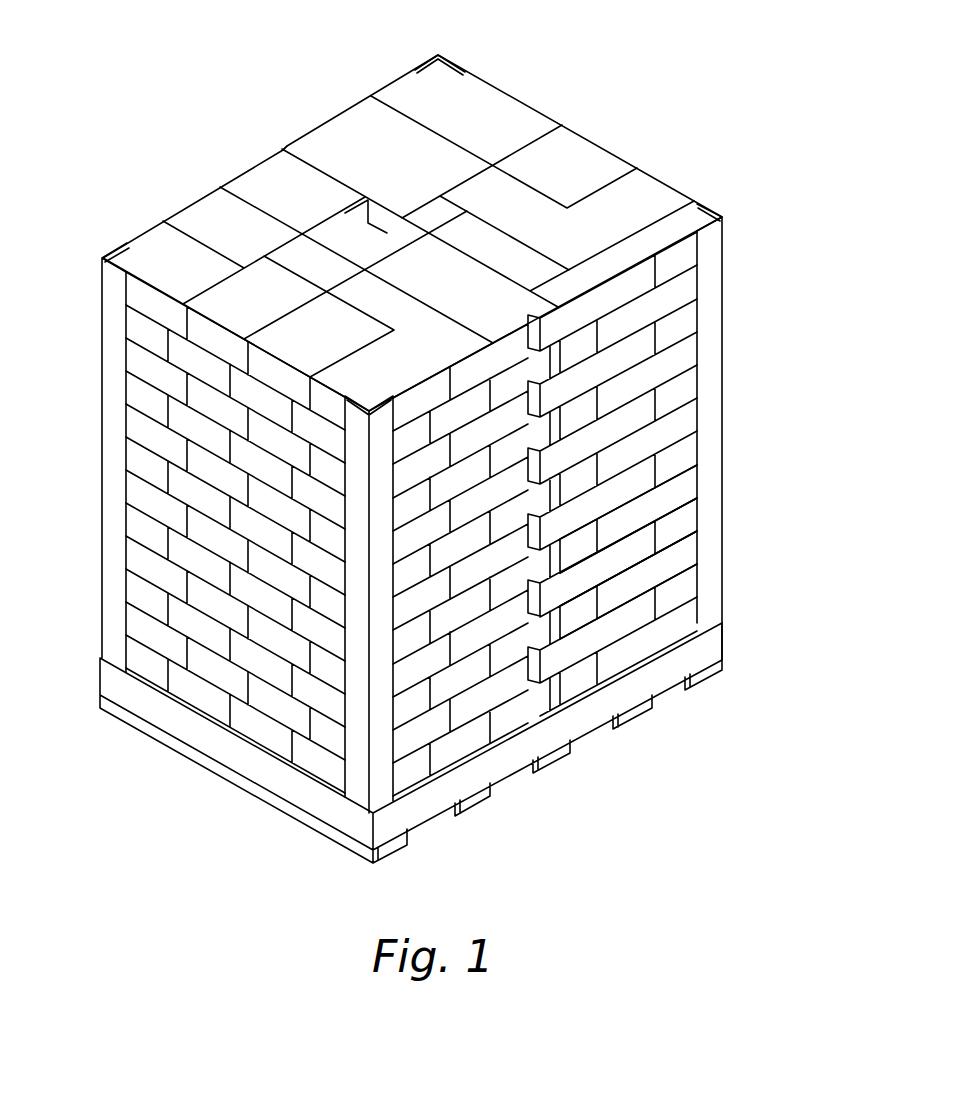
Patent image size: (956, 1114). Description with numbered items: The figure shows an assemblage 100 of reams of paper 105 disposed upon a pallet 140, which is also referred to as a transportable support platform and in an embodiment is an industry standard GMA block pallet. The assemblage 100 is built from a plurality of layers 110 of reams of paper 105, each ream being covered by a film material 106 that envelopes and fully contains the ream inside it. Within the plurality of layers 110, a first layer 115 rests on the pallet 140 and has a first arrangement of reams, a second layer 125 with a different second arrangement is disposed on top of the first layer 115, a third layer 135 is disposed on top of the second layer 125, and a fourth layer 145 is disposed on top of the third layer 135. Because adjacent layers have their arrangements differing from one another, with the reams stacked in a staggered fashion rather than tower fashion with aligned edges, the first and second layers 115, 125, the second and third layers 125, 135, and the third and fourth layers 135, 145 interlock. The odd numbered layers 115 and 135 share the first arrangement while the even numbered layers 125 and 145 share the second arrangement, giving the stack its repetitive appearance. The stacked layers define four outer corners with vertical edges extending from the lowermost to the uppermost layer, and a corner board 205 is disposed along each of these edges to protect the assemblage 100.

The assemblage 100 is at (711, 93).
The ream of paper 105 is at (465, 92).
The film material 106 is at (360, 134).
The plurality of layers 110 is at (80, 255).
The first layer 115 is at (688, 612).
The second layer 125 is at (670, 587).
The third layer 135 is at (688, 549).
The fourth layer 145 is at (671, 521).
The pallet 140 is at (200, 752).
The corner board 205 is at (715, 318).